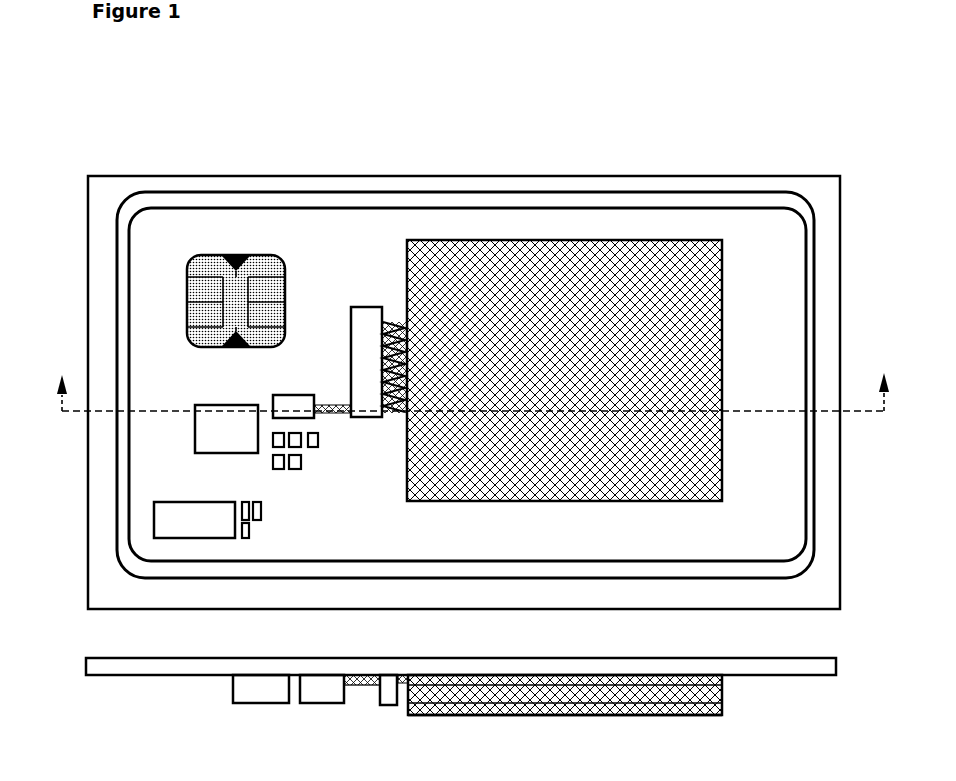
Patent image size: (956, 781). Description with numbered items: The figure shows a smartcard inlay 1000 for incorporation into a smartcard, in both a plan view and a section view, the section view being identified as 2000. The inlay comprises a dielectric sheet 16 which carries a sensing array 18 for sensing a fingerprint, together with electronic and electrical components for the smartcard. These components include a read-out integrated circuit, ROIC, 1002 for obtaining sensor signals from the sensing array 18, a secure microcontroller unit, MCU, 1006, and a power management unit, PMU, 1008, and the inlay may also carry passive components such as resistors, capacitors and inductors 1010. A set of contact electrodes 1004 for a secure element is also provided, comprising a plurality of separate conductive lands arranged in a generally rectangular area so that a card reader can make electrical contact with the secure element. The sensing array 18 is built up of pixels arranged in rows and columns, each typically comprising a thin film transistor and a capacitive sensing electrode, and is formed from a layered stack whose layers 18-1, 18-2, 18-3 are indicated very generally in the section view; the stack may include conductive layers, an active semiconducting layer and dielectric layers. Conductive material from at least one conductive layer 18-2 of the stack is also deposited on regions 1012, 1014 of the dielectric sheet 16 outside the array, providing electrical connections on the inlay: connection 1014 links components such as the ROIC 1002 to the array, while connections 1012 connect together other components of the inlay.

The smartcard inlay 1000 is at (505, 175).
The dielectric sheet 16 is at (750, 292).
The sensing array 18 is at (579, 250).
The layer of the stack 18-1 is at (723, 680).
The conductive layer of the stack 18-2 is at (723, 693).
The layer of the stack 18-3 is at (723, 712).
The read-out integrated circuit (ROIC) 1002 is at (368, 307).
The contact electrodes 1004 is at (197, 273).
The secure microcontroller unit (MCU) 1006 is at (193, 437).
The power management unit (PMU) 1008 is at (170, 538).
The passive components 1010 is at (297, 470).
The connections between other components 1012 is at (337, 408).
The connection between ROIC and array 1014 is at (395, 323).
The cross-section view 2000 is at (394, 776).